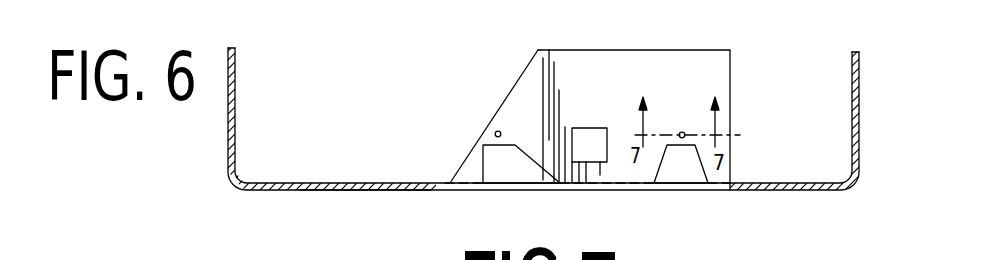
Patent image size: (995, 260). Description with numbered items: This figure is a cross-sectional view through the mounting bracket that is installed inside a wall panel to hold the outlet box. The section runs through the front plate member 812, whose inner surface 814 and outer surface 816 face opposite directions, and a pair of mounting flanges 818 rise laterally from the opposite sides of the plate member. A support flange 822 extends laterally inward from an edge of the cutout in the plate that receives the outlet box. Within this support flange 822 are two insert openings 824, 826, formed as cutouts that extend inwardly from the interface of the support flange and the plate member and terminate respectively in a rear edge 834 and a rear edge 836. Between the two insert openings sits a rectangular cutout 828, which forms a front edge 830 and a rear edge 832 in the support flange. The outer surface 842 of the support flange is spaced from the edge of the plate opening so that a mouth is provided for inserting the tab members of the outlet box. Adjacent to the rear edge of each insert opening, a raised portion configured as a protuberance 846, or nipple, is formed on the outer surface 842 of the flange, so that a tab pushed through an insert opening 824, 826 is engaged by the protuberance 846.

The front plate member 812 is at (318, 192).
The inner surface 814 is at (363, 183).
The outer surface 816 is at (362, 190).
The mounting flanges 818 is at (228, 150).
The support flange 822 is at (713, 62).
The insert opening 824 is at (501, 172).
The insert opening 826 is at (693, 175).
The rectangular cutout 828 is at (588, 145).
The front edge 830 is at (603, 163).
The rear edge 832 is at (582, 128).
The rear edge 834 is at (486, 144).
The rear edge 836 is at (688, 125).
The outer surface 842 is at (555, 62).
The protuberance 846 is at (496, 130).